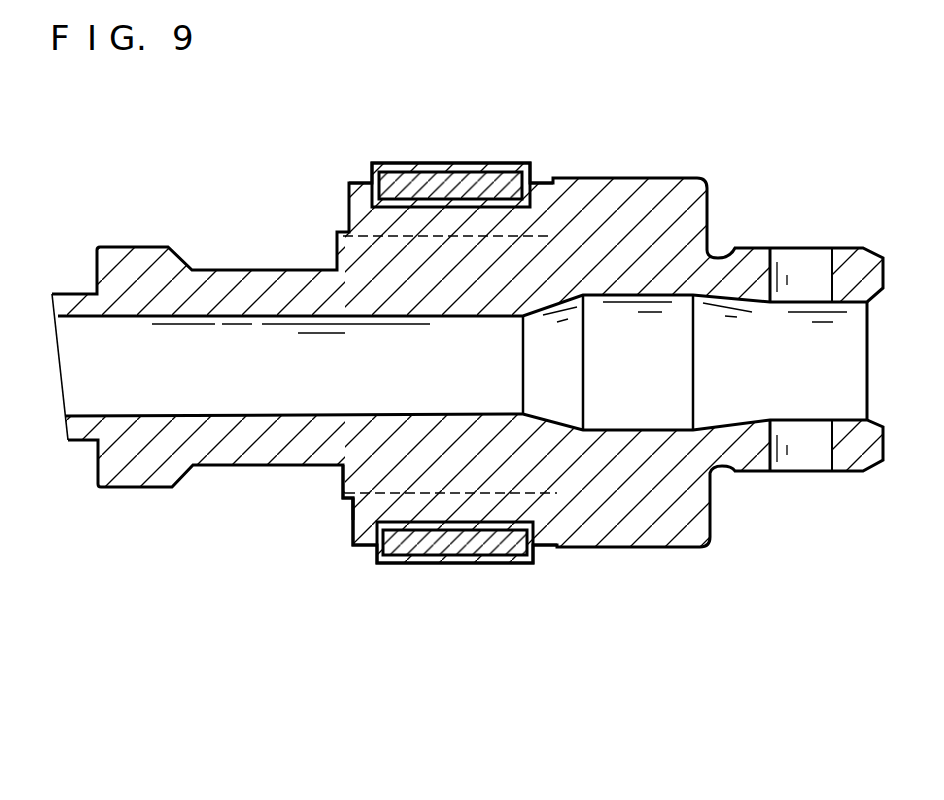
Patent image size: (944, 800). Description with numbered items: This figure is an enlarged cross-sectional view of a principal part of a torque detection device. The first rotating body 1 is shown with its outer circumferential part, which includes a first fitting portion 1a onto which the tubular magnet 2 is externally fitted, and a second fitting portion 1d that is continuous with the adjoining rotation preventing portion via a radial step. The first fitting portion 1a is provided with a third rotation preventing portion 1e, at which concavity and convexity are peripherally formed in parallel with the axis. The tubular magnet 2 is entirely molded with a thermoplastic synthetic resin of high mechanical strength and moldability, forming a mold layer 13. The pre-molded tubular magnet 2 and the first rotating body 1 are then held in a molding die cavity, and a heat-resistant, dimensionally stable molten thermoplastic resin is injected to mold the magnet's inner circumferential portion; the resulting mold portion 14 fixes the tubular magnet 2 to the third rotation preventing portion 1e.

The first rotating body 1 is at (716, 524).
The first fitting portion 1a is at (463, 497).
The second fitting portion 1d is at (650, 548).
The third rotation preventing portion 1e is at (352, 511).
The tubular magnet 2 is at (503, 555).
The mold layer 13 is at (435, 565).
The mold portion 14 is at (407, 515).